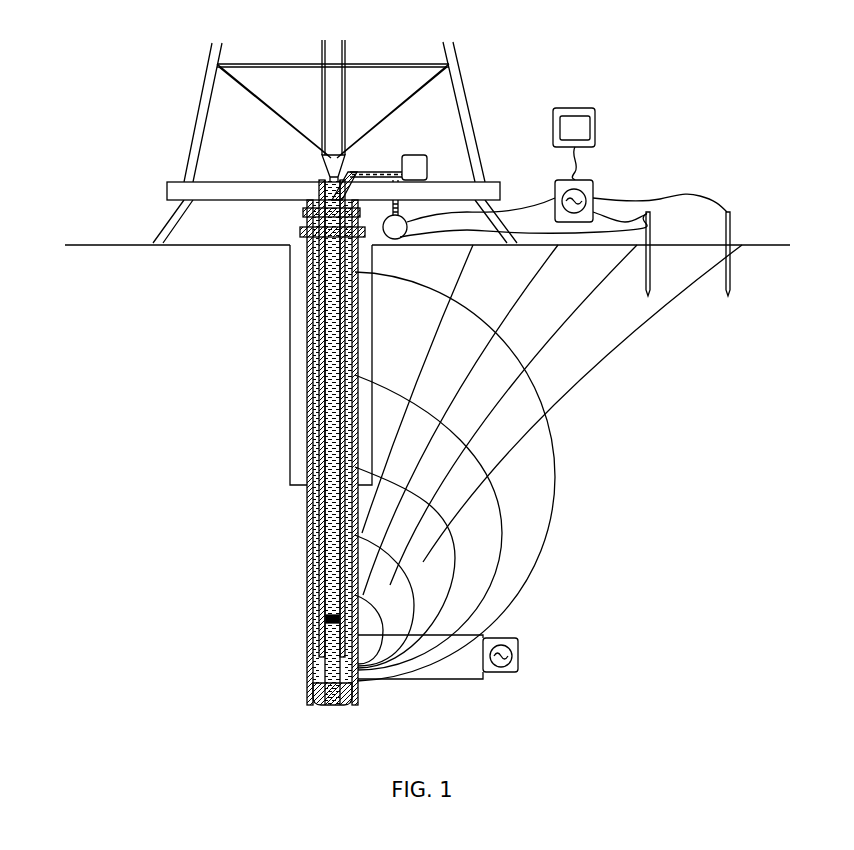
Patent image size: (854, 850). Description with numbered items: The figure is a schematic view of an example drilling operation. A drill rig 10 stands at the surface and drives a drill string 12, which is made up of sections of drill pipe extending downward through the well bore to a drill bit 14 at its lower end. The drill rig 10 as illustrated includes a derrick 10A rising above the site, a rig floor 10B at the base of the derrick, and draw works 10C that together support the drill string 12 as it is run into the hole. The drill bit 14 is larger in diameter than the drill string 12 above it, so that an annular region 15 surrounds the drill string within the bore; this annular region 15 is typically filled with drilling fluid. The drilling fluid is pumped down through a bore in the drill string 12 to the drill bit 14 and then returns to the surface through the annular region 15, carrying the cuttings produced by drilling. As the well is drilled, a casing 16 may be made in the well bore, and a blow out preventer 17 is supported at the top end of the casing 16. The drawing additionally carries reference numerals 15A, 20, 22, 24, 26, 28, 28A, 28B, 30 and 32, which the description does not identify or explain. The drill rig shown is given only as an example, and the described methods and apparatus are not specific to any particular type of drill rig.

The drill rig 10 is at (96, 93).
The derrick 10A is at (460, 87).
The rig floor 10B is at (172, 192).
The draw works 10C is at (325, 170).
The drill string 12 is at (320, 535).
The drill bit 14 is at (312, 697).
The annular region 15 is at (308, 497).
The fluid supply unit 15A is at (310, 165).
The casing 16 is at (293, 433).
The blow out preventer 17 is at (302, 226).
The power source 20 is at (520, 656).
The downhole electrode 22 is at (326, 613).
The sensor ball 24 is at (405, 222).
The signal generator 26 is at (597, 182).
The field lines 28 is at (558, 475).
The current lines 28A is at (583, 311).
The inner field lines 28B is at (504, 533).
The surface electrode 30 is at (732, 215).
The monitor / display 32 is at (580, 108).